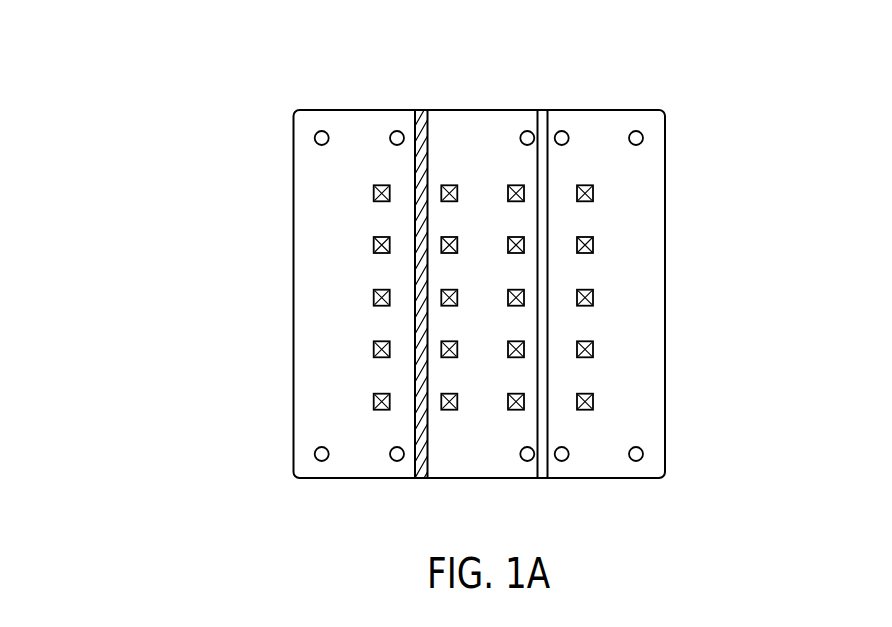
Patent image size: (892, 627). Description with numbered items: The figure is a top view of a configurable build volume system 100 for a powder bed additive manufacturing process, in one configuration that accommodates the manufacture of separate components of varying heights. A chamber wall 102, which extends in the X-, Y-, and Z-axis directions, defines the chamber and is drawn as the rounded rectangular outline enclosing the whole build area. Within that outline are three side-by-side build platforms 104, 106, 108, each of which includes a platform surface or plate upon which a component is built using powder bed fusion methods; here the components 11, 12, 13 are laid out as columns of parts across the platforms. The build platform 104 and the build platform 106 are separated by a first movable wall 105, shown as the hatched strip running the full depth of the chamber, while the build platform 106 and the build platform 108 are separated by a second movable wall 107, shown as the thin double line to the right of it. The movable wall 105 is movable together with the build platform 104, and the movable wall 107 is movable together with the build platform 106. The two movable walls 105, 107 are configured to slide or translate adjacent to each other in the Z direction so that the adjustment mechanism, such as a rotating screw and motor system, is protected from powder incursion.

The configurable build volume system 100 is at (172, 119).
The chamber wall 102 is at (293, 175).
The build platform 104 is at (318, 413).
The first movable wall 105 is at (413, 157).
The build platform 106 is at (489, 420).
The second movable wall 107 is at (543, 130).
The build platform 108 is at (648, 409).
The component 11 is at (381, 410).
The component 12 is at (448, 410).
The component 13 is at (583, 410).